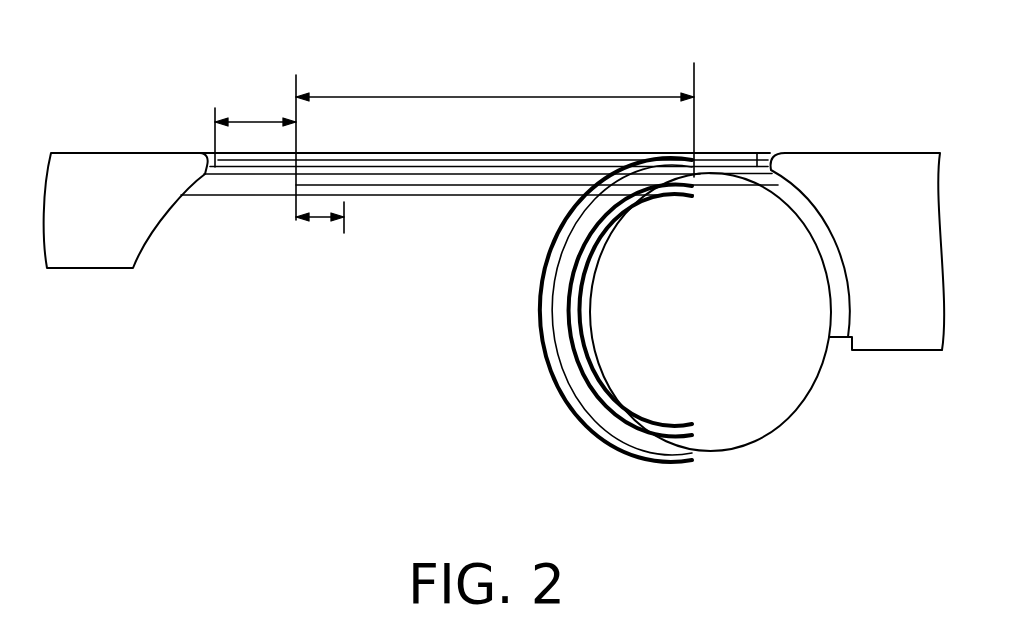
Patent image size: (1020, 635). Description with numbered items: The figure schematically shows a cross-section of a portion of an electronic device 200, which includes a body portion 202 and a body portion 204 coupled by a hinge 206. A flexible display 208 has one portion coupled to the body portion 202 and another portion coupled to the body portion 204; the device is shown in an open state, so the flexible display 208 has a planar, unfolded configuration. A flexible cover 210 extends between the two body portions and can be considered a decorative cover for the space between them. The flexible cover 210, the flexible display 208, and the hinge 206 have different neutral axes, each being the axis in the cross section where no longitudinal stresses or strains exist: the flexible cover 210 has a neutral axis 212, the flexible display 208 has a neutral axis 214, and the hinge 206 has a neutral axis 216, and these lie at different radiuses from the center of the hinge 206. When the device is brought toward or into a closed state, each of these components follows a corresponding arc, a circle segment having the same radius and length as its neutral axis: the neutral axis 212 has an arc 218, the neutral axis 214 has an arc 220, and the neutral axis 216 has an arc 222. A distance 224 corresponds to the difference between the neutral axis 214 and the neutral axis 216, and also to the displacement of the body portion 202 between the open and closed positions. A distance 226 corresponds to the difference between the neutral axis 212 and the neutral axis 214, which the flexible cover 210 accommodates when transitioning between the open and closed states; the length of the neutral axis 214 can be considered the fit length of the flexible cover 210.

The electronic device 200 is at (343, 498).
The body portion 202 is at (122, 215).
The body portion 204 is at (900, 243).
The hinge 206 is at (711, 321).
The flexible display 208 is at (357, 173).
The flexible cover 210 is at (457, 154).
The neutral axis 212 is at (263, 160).
The neutral axis 214 is at (493, 185).
The neutral axis 216 is at (560, 197).
The arc 218 is at (540, 283).
The arc 220 is at (565, 342).
The arc 222 is at (602, 387).
The distance 224 is at (317, 222).
The distance 226 is at (263, 120).